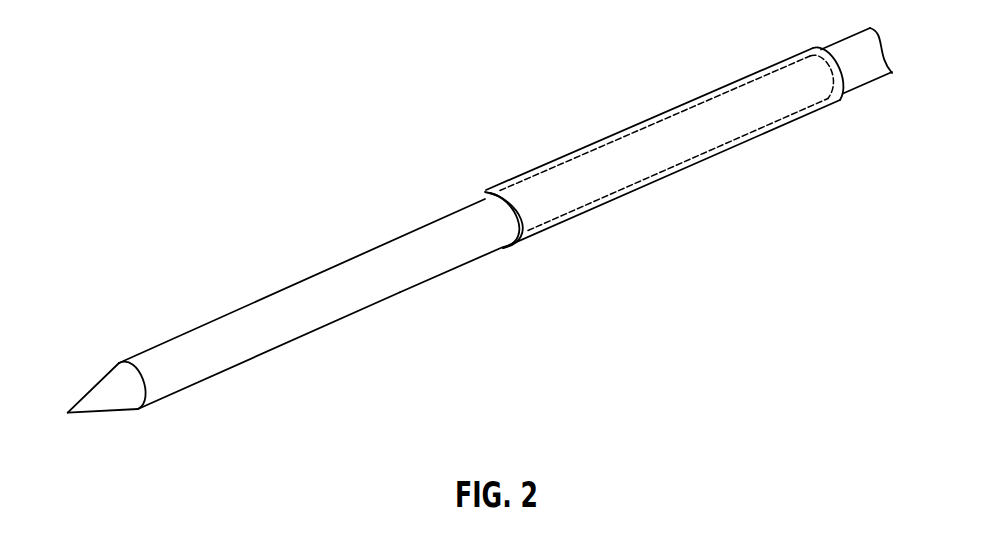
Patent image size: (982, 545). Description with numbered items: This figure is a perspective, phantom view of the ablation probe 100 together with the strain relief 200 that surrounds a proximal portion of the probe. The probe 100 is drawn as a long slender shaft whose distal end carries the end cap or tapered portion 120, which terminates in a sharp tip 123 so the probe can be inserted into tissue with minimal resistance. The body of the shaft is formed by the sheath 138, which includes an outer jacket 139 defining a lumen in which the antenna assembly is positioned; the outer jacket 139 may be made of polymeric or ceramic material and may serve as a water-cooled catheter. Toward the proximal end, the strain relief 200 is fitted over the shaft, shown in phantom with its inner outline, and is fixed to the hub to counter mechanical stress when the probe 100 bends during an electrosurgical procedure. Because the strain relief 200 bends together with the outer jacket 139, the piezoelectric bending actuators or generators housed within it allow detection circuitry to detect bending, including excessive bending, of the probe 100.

The ablation probe 100 is at (367, 247).
The end cap or tapered portion 120 is at (102, 378).
The sharp tip 123 is at (68, 414).
The sheath 138 is at (352, 333).
The outer jacket 139 is at (458, 267).
The strain relief 200 is at (599, 122).